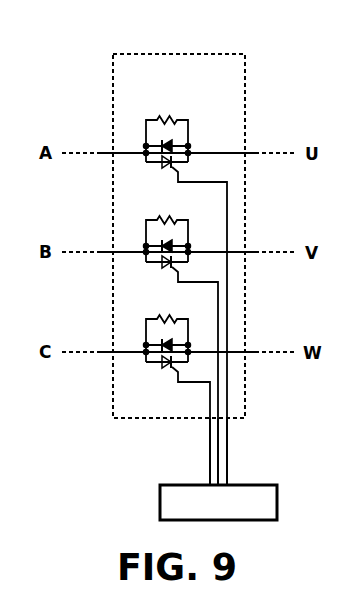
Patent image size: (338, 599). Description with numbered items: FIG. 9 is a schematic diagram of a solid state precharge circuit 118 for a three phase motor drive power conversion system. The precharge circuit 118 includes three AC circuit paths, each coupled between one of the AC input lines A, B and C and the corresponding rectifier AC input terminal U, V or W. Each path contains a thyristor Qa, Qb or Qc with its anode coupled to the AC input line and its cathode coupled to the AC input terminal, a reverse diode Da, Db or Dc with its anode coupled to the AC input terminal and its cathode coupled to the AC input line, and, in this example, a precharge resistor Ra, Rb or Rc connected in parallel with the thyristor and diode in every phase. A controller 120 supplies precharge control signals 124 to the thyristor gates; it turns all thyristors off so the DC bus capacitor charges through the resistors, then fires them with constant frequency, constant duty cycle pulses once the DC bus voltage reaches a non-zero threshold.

The precharge circuit 118 is at (180, 54).
The controller 120 is at (160, 501).
The precharge control signals 124 is at (233, 454).